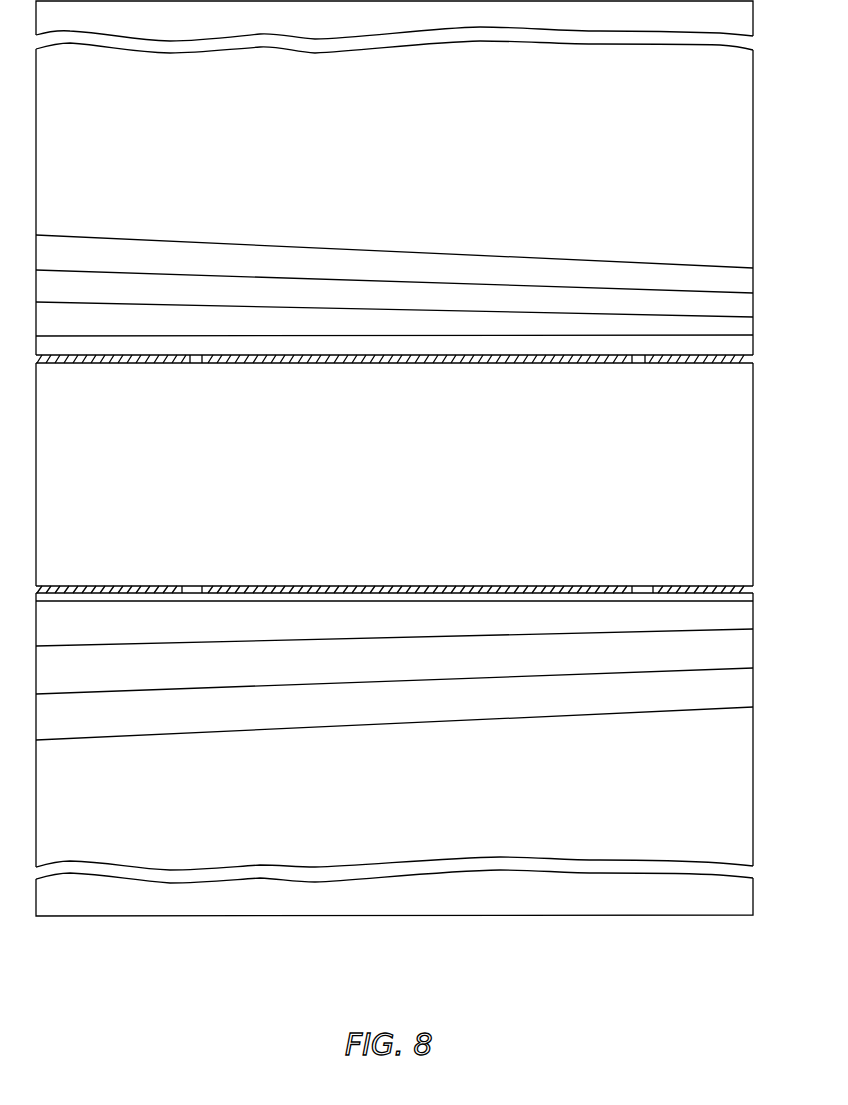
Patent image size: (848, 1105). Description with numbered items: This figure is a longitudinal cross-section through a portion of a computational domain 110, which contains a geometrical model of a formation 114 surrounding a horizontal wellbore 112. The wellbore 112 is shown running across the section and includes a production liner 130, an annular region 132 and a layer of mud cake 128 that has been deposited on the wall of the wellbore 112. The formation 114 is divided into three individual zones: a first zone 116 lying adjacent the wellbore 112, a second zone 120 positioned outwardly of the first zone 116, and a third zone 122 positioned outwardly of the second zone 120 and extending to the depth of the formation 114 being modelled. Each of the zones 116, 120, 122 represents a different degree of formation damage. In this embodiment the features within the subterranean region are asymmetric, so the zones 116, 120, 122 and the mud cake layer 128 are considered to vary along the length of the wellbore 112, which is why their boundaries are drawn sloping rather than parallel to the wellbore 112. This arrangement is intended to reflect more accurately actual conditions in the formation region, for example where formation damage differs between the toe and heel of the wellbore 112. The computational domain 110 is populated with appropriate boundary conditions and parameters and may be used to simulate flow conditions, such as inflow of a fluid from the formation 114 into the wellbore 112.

The computational domain 110 is at (138, 959).
The wellbore 112 is at (724, 404).
The formation 114 is at (661, 903).
The first zone 116 is at (537, 298).
The second zone 120 is at (657, 270).
The third zone 122 is at (723, 96).
The layer of mud cake 128 is at (540, 328).
The production liner 130 is at (410, 586).
The annular region 132 is at (643, 343).